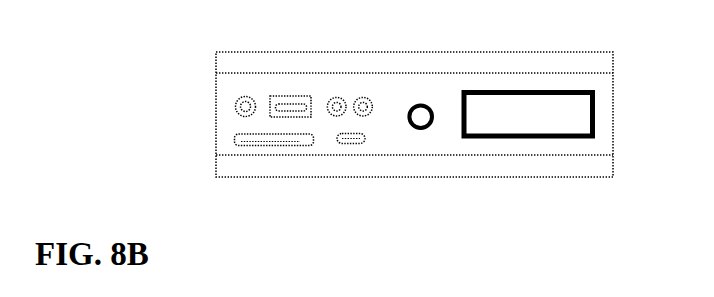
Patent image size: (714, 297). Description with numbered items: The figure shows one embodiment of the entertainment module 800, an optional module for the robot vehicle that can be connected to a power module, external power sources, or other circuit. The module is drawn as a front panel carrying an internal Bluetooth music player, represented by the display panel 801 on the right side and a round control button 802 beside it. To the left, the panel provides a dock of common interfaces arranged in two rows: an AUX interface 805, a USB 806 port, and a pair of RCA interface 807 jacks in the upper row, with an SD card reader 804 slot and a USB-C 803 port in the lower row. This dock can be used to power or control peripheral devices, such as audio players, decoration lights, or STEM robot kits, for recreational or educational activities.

The entertainment module 800 is at (182, 83).
The display panel 801 is at (580, 106).
The control button 802 is at (421, 129).
The USB-C 803 is at (350, 127).
The SD card reader 804 is at (234, 139).
The AUX interface 805 is at (235, 106).
The USB 806 is at (287, 96).
The RCA interface 807 is at (362, 97).